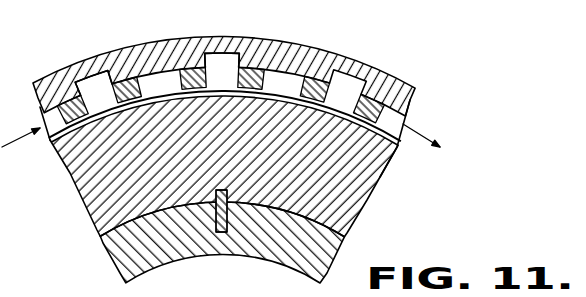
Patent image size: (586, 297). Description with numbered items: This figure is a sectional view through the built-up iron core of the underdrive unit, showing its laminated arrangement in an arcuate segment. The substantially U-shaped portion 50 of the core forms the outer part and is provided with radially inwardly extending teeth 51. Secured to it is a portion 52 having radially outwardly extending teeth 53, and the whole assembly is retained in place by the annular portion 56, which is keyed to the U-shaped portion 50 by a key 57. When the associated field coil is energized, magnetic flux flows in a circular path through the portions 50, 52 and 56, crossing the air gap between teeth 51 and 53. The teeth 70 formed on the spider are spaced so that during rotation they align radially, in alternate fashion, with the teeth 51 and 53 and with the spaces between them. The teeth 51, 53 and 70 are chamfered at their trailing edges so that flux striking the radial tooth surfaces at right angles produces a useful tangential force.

The U-shaped portion 50 is at (303, 33).
The radially inwardly extending teeth 51 is at (249, 62).
The portion having radially outwardly extending teeth 52 is at (107, 203).
The radially outwardly extending teeth 53 is at (263, 91).
The annular portion 56 is at (222, 257).
The key 57 is at (216, 224).
The teeth 70 is at (132, 73).